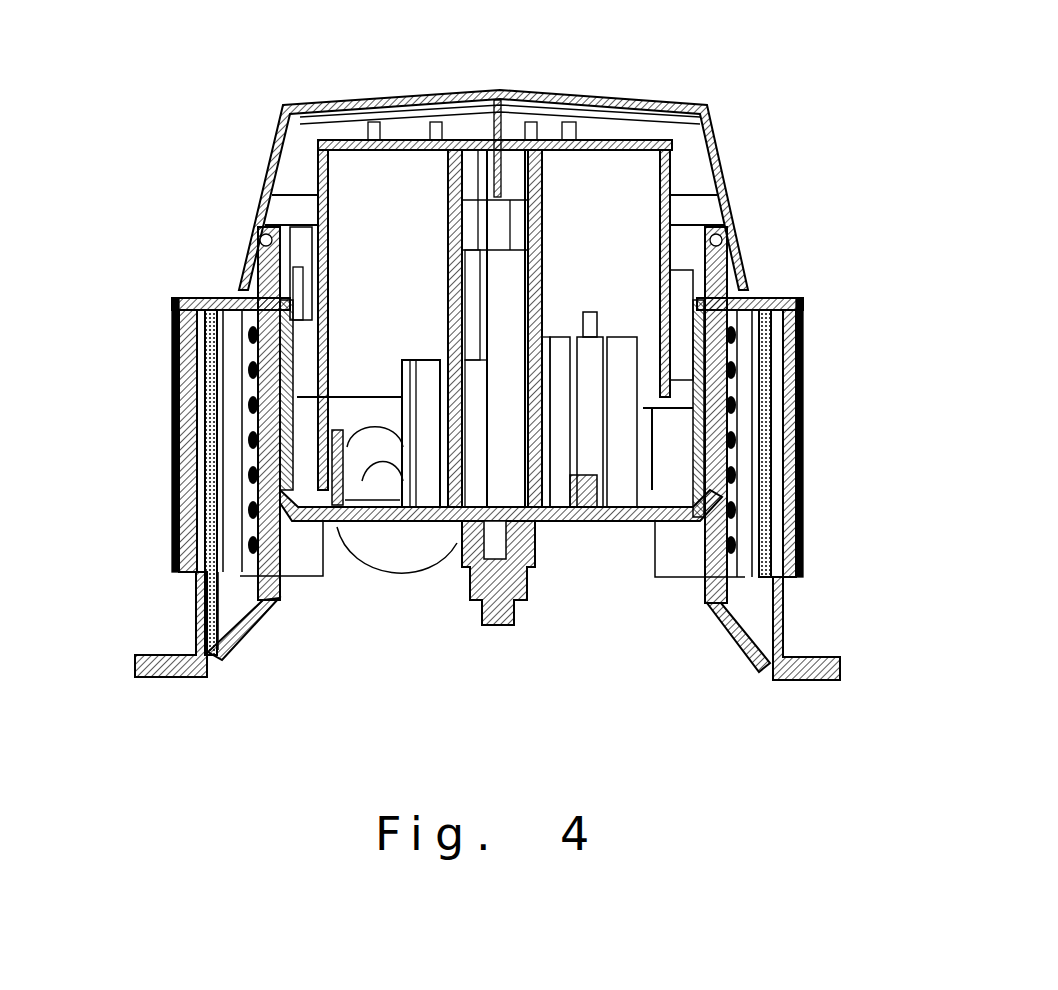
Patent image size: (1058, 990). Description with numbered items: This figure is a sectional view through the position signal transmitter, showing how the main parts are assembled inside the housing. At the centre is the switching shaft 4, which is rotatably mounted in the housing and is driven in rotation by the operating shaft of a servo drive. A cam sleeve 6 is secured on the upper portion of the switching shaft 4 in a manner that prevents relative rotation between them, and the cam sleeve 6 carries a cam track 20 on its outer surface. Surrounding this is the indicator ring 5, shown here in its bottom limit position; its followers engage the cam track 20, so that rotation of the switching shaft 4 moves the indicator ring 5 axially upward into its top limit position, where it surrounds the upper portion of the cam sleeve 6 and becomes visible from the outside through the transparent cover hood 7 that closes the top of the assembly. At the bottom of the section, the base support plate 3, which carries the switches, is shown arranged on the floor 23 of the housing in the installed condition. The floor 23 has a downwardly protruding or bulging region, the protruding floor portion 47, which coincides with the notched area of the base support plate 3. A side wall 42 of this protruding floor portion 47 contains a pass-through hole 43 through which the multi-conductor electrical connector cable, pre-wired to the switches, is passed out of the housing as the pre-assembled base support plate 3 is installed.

The base support plate 3 is at (614, 498).
The switching shaft 4 is at (514, 280).
The indicator ring 5 is at (748, 277).
The cam sleeve 6 is at (674, 136).
The cover hood 7 is at (300, 160).
The cam track 20 is at (672, 283).
The floor 23 is at (663, 507).
The side wall 42 is at (380, 439).
The pass-through hole 43 is at (395, 478).
The protruding floor portion 47 is at (383, 538).